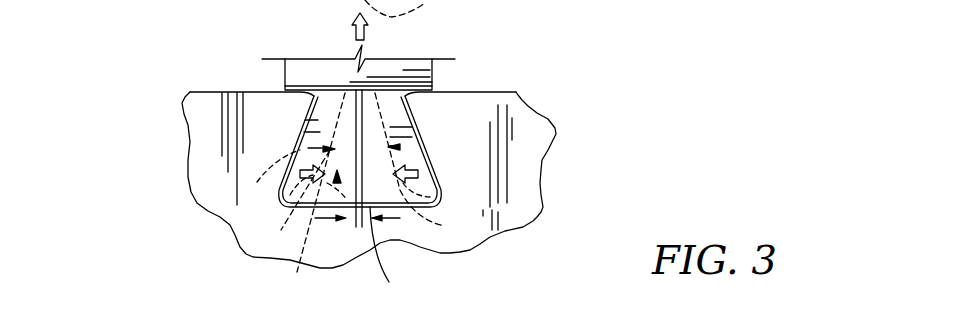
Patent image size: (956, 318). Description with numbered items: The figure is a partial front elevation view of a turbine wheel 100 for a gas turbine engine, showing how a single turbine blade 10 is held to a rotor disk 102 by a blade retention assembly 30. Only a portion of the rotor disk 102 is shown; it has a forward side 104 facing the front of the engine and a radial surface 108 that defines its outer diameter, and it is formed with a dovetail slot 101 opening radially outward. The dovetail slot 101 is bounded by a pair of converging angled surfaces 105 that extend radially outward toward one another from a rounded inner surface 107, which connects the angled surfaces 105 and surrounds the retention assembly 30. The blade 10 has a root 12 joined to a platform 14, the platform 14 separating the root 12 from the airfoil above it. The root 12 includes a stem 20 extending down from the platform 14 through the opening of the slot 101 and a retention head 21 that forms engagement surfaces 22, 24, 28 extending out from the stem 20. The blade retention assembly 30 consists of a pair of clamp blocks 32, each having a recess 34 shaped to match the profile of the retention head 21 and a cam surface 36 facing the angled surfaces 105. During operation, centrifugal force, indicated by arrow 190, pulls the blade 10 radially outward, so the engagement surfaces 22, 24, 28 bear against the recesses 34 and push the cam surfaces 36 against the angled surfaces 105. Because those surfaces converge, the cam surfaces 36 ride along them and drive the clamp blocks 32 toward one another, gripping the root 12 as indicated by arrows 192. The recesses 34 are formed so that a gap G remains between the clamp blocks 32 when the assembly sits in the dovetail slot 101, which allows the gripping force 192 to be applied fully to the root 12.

The turbine blade 10 is at (476, 47).
The root 12 is at (285, 104).
The platform 14 is at (423, 47).
The stem 20 is at (377, 110).
The retention head 21 is at (314, 197).
The engagement surface 22 is at (338, 172).
The engagement surface 24 is at (422, 166).
The engagement surface 28 is at (302, 203).
The blade retention assembly 30 is at (297, 141).
The clamp block 32 is at (290, 150).
The recess 34 is at (452, 167).
The cam surface 36 is at (300, 135).
The turbine wheel 100 is at (604, 62).
The dovetail slot 101 is at (403, 230).
The rotor disk 102 is at (608, 131).
The forward side 104 is at (538, 216).
The angled surfaces 105 is at (417, 120).
The rounded inner surface 107 is at (394, 257).
The radial surface 108 is at (507, 92).
The centrifugal force arrow 190 is at (352, 33).
The gripping force arrows 192 is at (302, 176).
The gap G is at (355, 224).